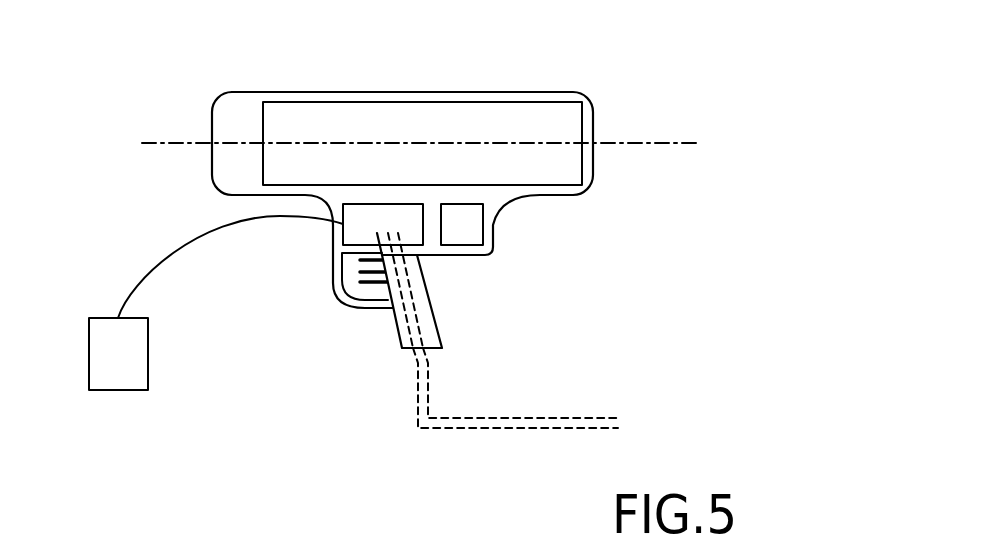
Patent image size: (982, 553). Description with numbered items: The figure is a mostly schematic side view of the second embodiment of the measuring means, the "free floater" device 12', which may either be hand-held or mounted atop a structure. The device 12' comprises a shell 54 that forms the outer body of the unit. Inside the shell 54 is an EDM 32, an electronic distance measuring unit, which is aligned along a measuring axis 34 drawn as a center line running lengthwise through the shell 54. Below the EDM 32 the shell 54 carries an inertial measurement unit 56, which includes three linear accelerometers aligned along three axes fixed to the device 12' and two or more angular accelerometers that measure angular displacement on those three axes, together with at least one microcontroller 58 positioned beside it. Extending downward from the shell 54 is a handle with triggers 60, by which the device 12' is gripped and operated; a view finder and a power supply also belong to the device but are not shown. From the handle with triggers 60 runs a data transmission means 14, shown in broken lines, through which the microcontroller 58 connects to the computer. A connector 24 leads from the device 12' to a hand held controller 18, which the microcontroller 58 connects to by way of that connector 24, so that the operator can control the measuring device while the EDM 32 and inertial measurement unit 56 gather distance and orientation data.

The free floater device 12' is at (804, 74).
The data transmission means 14 is at (587, 418).
The hand held controller 18 is at (89, 375).
The connector 24 is at (157, 263).
The EDM 32 is at (558, 130).
The measuring axis 34 is at (178, 143).
The shell 54 is at (375, 92).
The inertial measurement unit 56 is at (472, 225).
The microcontroller 58 is at (395, 230).
The handle with triggers 60 is at (393, 327).